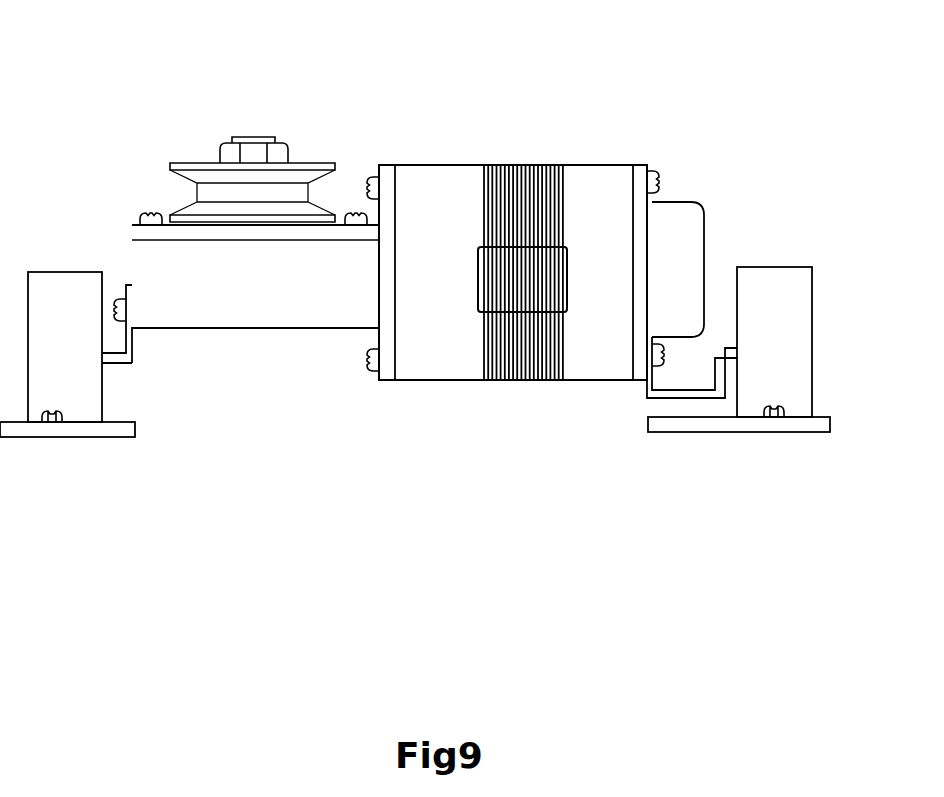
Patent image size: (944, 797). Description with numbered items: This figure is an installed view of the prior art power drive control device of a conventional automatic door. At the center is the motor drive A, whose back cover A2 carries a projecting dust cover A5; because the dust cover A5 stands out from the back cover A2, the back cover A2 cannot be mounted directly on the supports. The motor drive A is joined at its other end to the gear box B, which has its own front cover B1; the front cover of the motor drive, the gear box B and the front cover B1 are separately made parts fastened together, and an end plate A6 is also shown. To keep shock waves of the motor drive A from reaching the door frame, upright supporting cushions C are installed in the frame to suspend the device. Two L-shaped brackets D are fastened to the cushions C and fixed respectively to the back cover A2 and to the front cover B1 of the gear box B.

The motor drive A is at (530, 145).
The back cover A2 is at (602, 165).
The dust cover A5 is at (700, 208).
The motor front end plate A6 is at (418, 188).
The gear box B is at (290, 312).
The front cover B1 is at (140, 235).
The upright supporting cushions C is at (62, 280).
The L-shaped brackets D is at (127, 365).